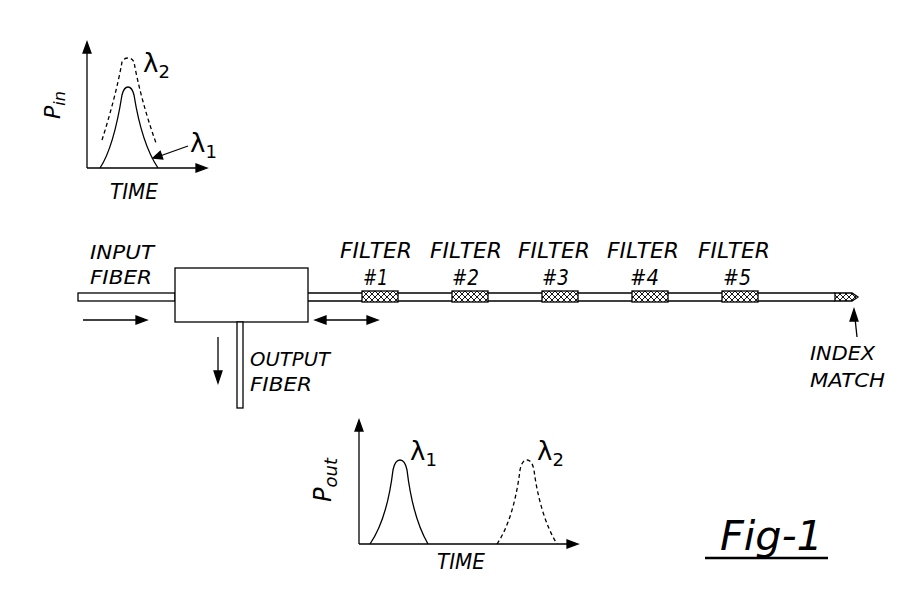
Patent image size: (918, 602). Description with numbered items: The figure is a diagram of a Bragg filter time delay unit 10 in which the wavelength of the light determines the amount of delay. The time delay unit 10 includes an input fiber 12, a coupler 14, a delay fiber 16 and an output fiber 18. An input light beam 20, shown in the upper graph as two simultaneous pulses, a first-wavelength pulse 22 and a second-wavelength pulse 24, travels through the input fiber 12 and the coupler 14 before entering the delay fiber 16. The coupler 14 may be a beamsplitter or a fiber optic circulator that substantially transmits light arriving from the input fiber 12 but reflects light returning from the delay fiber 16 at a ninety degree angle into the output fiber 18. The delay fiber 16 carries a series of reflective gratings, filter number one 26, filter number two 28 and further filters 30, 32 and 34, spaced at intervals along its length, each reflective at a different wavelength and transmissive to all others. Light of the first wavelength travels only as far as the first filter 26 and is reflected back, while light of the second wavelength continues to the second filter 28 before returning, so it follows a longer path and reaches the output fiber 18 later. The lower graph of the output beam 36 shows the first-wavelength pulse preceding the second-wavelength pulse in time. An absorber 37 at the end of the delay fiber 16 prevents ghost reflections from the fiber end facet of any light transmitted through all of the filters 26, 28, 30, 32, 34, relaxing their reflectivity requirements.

The time delay unit 10 is at (778, 212).
The input fiber 12 is at (80, 294).
The coupler 14 is at (263, 268).
The delay fiber 16 is at (780, 293).
The output fiber 18 is at (237, 394).
The input light beam 20 is at (132, 44).
The pulse of wavelength λ1 22 is at (142, 122).
The pulse of wavelength λ2 24 is at (136, 88).
The filter number one 26 is at (386, 302).
The filter number two 28 is at (468, 302).
The filter number three 30 is at (564, 302).
The filter number four 32 is at (654, 302).
The filter number five 34 is at (742, 302).
The output beam 36 is at (560, 498).
The absorber 37 is at (843, 289).